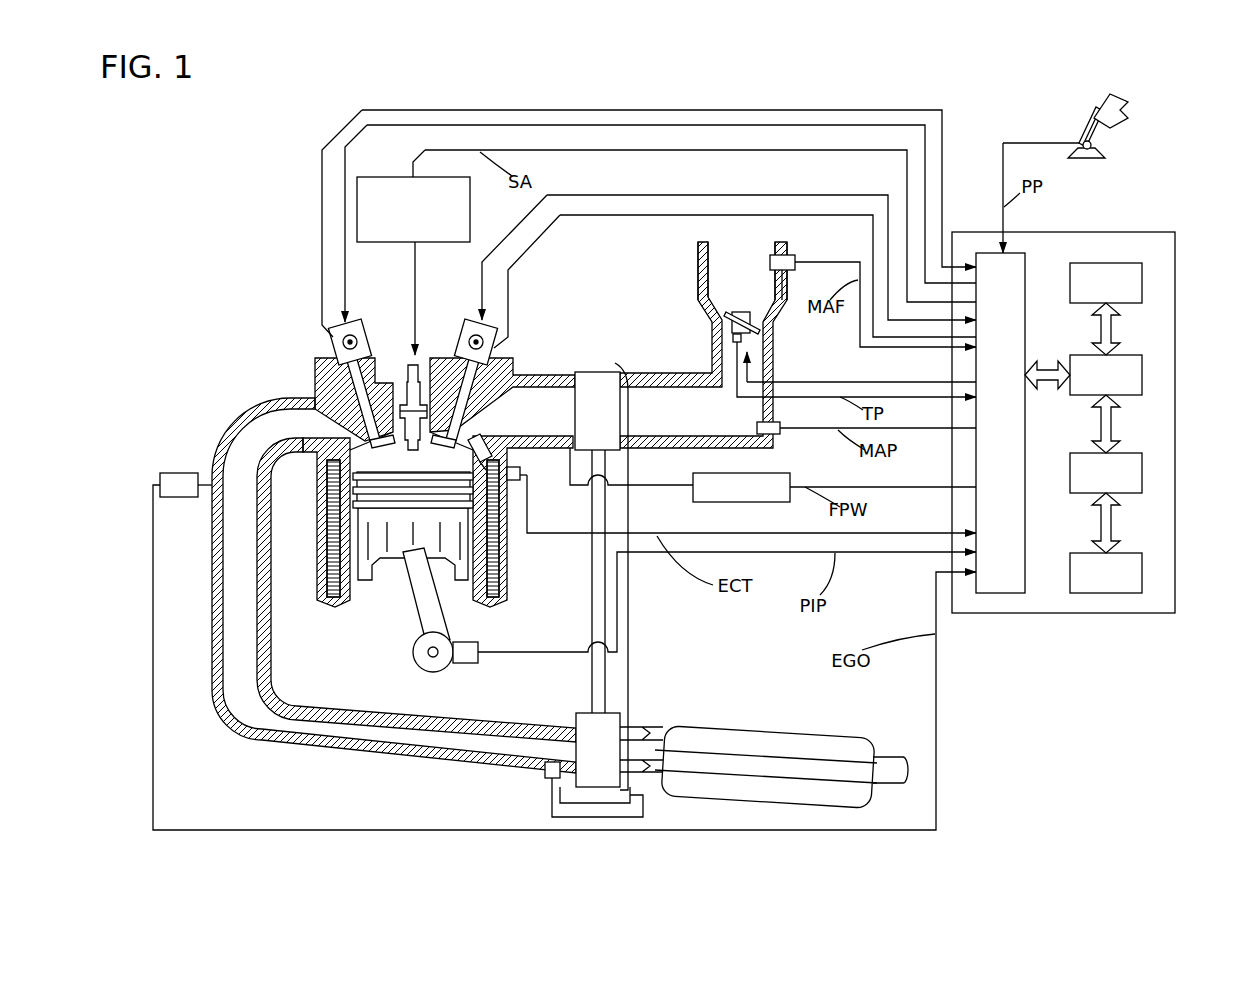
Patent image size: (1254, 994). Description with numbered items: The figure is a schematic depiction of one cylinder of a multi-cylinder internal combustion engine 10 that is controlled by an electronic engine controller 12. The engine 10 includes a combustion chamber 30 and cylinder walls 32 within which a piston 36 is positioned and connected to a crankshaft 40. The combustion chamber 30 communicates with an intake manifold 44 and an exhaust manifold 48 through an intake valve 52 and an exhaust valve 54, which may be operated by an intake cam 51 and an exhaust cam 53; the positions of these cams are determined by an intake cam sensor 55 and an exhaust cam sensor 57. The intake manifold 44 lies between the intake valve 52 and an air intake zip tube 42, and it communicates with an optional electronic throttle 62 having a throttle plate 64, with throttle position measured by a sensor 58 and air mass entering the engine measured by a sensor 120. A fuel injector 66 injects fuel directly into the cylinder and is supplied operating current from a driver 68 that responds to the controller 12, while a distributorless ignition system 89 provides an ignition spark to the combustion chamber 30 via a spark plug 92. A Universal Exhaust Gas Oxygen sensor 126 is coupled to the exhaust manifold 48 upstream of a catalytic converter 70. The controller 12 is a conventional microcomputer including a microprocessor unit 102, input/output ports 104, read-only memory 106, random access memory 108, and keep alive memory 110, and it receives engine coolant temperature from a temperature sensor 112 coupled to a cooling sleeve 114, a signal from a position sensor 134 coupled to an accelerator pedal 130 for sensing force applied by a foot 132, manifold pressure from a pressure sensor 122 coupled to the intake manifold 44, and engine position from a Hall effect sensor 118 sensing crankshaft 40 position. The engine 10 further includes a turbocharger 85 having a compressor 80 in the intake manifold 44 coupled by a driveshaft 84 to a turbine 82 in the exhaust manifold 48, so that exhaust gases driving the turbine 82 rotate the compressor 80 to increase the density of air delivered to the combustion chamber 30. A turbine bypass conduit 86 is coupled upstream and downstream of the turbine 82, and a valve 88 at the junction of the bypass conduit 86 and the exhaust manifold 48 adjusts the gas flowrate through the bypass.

The internal combustion engine 10 is at (250, 312).
The electronic engine controller 12 is at (1172, 232).
The combustion chamber 30 is at (330, 555).
The cylinder walls 32 is at (355, 605).
The piston 36 is at (393, 595).
The crankshaft 40 is at (420, 670).
The air intake zip tube 42 is at (726, 290).
The intake manifold 44 is at (664, 423).
The exhaust manifold 48 is at (274, 427).
The intake cam 51 is at (468, 320).
The intake valve 52 is at (460, 432).
The exhaust cam 53 is at (357, 322).
The exhaust valve 54 is at (318, 395).
The intake cam sensor 55 is at (496, 350).
The exhaust cam sensor 57 is at (330, 345).
The throttle position sensor 58 is at (722, 346).
The electronic throttle 62 is at (760, 320).
The throttle plate 64 is at (728, 316).
The fuel injector 66 is at (495, 440).
The driver 68 is at (706, 502).
The catalytic converter 70 is at (830, 730).
The compressor 80 is at (586, 421).
The turbine 82 is at (587, 765).
The driveshaft 84 is at (598, 585).
The turbocharger 85 is at (628, 565).
The turbine bypass conduit 86 is at (630, 796).
The valve 88 is at (543, 775).
The distributorless ignition system 89 is at (374, 177).
The spark plug 92 is at (418, 365).
The microprocessor unit 102 is at (1142, 377).
The input/output ports 104 is at (1025, 252).
The read-only memory 106 is at (1142, 282).
The random access memory 108 is at (1142, 475).
The keep alive memory 110 is at (1142, 575).
The temperature sensor 112 is at (527, 485).
The cooling sleeve 114 is at (500, 578).
The Hall effect sensor 118 is at (470, 665).
The mass air flow sensor 120 is at (790, 258).
The pressure sensor 122 is at (780, 434).
The Universal Exhaust Gas Oxygen sensor 126 is at (158, 478).
The accelerator pedal 130 is at (1062, 124).
The foot 132 is at (1122, 106).
The position sensor 134 is at (1102, 147).